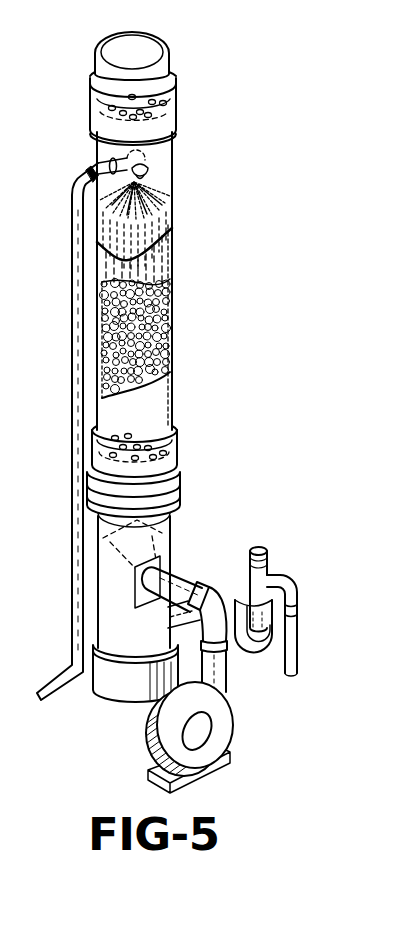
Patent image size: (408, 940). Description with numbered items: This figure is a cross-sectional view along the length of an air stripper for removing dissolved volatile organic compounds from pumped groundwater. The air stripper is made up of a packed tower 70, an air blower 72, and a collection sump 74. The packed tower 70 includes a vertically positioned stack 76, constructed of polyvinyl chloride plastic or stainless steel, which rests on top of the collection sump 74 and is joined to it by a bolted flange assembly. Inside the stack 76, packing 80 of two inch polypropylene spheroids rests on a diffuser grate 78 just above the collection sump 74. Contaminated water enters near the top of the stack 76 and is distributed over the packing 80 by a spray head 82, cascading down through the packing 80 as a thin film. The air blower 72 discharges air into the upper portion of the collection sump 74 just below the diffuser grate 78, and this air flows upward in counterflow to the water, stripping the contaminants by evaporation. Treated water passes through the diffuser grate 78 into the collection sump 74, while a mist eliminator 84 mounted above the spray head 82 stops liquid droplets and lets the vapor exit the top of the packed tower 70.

The packed tower 70 is at (190, 342).
The air blower 72 is at (224, 716).
The collection sump 74 is at (170, 538).
The stack 76 is at (172, 208).
The diffuser grate 78 is at (142, 431).
The packing 80 is at (171, 298).
The spray head 82 is at (143, 166).
The mist eliminator 84 is at (158, 102).